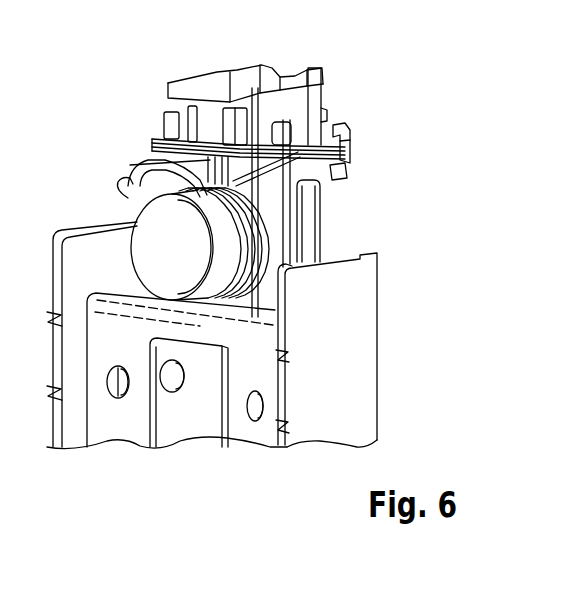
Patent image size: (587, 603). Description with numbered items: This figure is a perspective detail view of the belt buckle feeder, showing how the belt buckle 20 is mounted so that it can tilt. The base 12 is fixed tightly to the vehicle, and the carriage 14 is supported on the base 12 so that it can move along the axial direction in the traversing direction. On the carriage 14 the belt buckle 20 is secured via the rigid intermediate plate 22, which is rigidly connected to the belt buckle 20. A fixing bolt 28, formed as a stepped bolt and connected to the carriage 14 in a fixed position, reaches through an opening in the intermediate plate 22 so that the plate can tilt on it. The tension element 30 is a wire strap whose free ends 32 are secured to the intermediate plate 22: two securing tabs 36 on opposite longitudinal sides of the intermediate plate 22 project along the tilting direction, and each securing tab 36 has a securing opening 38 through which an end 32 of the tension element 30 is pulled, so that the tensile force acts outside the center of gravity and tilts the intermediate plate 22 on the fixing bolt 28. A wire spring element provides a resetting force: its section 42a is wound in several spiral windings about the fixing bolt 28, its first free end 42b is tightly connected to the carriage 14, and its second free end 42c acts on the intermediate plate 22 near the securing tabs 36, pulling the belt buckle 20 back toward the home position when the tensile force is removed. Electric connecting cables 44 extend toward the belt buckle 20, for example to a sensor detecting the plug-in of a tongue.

The base 12 is at (121, 420).
The carriage 14 is at (363, 393).
The belt buckle 20 is at (238, 78).
The intermediate plate 22 is at (290, 223).
The fixing bolt 28 is at (140, 215).
The tension element 30 is at (335, 183).
The free ends 32 is at (350, 152).
The securing tabs 36 is at (345, 128).
The securing opening 38 is at (328, 117).
The section of the spring element 42a is at (152, 157).
The first free end of the spring element 42b is at (120, 183).
The second free end of the spring element 42c is at (335, 170).
The electric connecting cables 44 is at (300, 246).